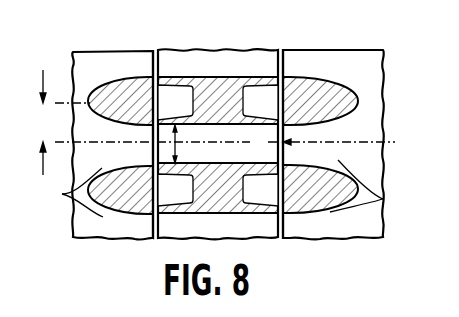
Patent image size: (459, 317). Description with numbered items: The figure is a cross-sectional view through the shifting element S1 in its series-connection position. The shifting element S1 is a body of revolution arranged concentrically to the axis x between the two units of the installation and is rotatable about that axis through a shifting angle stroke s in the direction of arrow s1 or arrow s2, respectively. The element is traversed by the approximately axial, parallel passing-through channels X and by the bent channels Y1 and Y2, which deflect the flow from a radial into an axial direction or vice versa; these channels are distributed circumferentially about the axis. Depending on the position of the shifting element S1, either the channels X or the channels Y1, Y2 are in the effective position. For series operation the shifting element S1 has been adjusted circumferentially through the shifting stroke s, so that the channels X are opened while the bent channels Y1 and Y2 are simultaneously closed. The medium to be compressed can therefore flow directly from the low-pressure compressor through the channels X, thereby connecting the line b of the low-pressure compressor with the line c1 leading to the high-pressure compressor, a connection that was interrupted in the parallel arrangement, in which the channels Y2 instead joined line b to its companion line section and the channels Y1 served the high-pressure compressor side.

The passing-through channel X is at (162, 150).
The central axis x is at (225, 143).
The shifting angle stroke s is at (43, 122).
The shifting direction arrow s1 is at (182, 134).
The shifting direction arrow s2 is at (182, 152).
The deflecting channel Y1 is at (175, 145).
The deflecting channel Y2 is at (260, 145).
The line c1 is at (74, 192).
The line b is at (383, 199).
The shifting element S1 is at (238, 212).